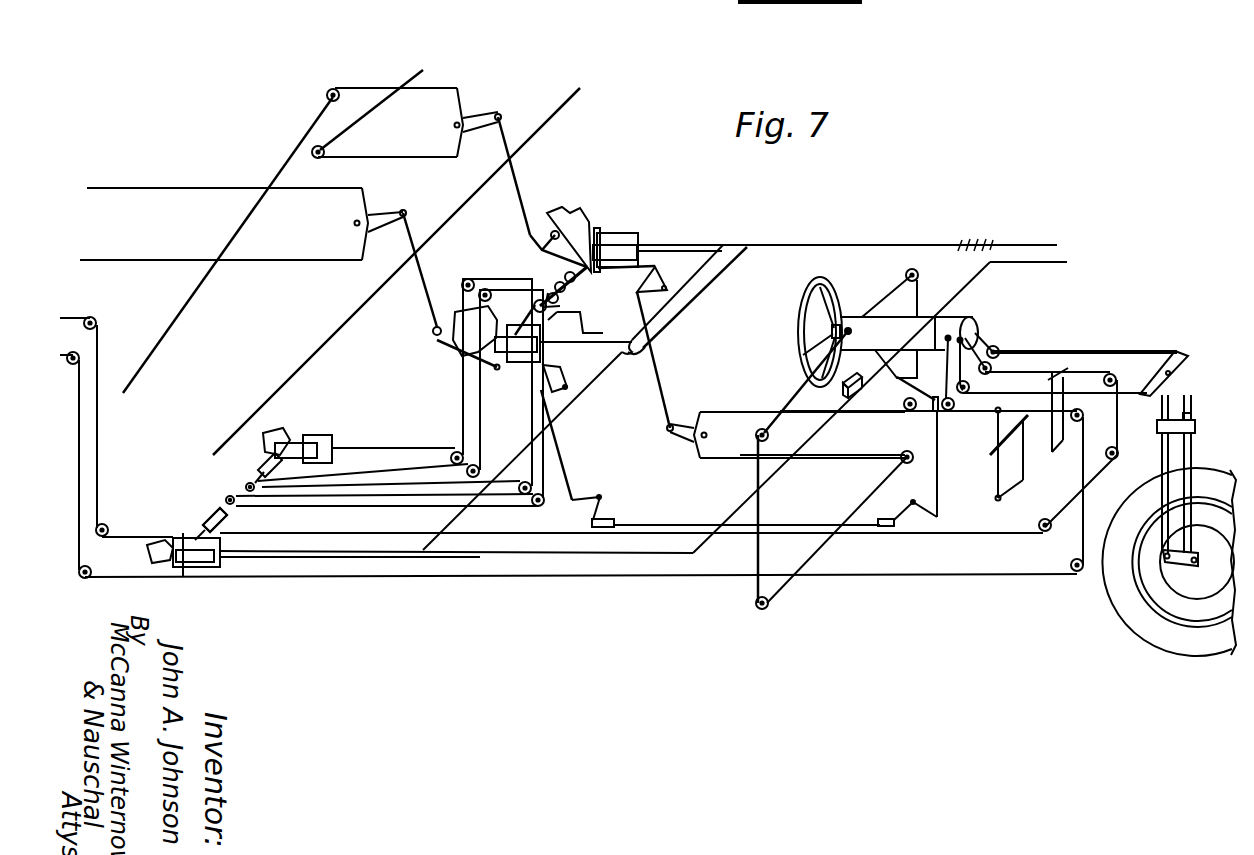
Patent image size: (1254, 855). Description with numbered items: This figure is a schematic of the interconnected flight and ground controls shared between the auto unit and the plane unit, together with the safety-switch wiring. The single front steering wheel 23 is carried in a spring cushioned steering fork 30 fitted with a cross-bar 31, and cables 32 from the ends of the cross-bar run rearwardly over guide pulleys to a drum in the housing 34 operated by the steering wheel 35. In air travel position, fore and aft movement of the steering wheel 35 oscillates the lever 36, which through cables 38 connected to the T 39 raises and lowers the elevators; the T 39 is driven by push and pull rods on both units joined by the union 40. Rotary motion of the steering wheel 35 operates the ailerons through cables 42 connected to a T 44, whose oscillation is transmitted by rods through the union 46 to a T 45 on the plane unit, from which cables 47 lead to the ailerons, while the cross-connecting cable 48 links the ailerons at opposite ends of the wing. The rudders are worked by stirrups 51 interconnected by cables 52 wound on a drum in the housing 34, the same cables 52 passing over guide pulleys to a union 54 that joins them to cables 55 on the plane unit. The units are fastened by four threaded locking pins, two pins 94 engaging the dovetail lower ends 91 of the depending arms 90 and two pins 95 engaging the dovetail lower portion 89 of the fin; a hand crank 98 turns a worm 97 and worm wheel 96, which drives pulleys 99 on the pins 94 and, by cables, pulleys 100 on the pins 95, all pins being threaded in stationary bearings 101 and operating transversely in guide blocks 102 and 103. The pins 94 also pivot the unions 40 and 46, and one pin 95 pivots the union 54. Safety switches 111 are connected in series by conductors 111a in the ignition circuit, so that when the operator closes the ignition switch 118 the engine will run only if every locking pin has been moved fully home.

The front steering wheel 23 is at (1110, 600).
The steering fork 30 is at (1162, 458).
The cross-bar 31 is at (1183, 371).
The cables 32 is at (1123, 392).
The housing 34 is at (885, 322).
The steering wheel 35 is at (831, 286).
The lever 36 is at (907, 388).
The cables 38 is at (276, 255).
The T 39 is at (368, 203).
The union 40 is at (508, 366).
The cables 42 is at (897, 298).
The T 44 is at (696, 448).
The T 45 is at (462, 102).
The union 46 is at (600, 278).
The cables 47 is at (375, 105).
The cross-connecting cable 48 is at (326, 339).
The stirrups 51 is at (1060, 450).
The cables 52 is at (1005, 378).
The union 54 is at (184, 578).
The cables 55 is at (108, 482).
The dovetail lower portion 89 is at (276, 432).
The depending arms 90 is at (585, 218).
The dovetail lower ends 91 is at (462, 360).
The locking pins 94 is at (617, 253).
The locking pins 95 is at (264, 458).
The worm wheel 96 is at (561, 298).
The worm 97 is at (563, 326).
The hand crank 98 is at (585, 322).
The pulleys 99 is at (538, 303).
The pulleys 100 is at (246, 484).
The stationary bearings 101 is at (518, 330).
The guide block 102 is at (640, 240).
The guide block 103 is at (334, 440).
The safety switches 111 is at (637, 237).
The conductors 111a is at (672, 303).
The ignition switch 118 is at (832, 391).